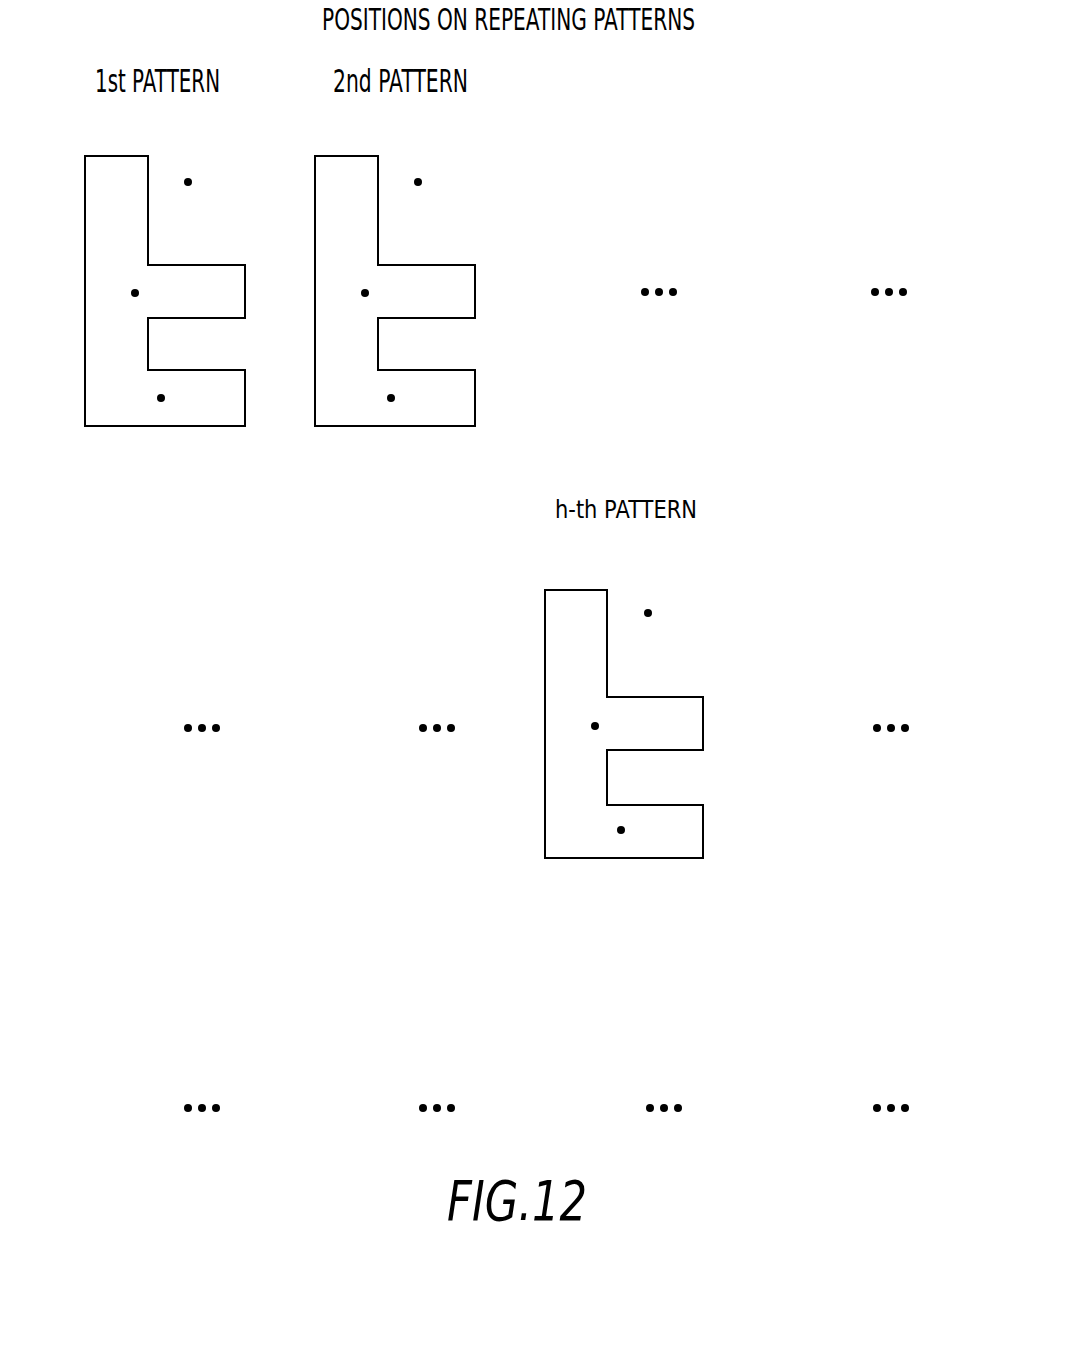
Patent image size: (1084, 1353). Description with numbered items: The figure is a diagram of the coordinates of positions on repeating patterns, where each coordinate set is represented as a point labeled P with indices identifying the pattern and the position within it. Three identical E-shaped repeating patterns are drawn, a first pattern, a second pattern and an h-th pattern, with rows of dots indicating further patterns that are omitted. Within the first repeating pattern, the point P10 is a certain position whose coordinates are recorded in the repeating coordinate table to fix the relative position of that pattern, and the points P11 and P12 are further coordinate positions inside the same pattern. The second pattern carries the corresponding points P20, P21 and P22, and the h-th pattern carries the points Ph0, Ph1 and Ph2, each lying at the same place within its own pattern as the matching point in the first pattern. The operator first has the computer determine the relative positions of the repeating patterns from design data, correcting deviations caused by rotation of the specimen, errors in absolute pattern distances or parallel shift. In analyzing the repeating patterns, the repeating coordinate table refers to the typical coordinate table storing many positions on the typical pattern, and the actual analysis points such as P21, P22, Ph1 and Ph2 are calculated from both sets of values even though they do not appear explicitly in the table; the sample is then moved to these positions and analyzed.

The point P10 in first repeating pattern P10 is at (213, 181).
The point P11 in first repeating pattern P11 is at (160, 291).
The point P12 in first repeating pattern P12 is at (185, 399).
The point P20 in second repeating pattern P20 is at (443, 181).
The point P21 in second repeating pattern P21 is at (390, 291).
The point P22 in second repeating pattern P22 is at (415, 399).
The point Ph0 in h-th repeating pattern Ph0 is at (673, 613).
The point Ph1 in h-th repeating pattern Ph1 is at (619, 722).
The point Ph2 in h-th repeating pattern Ph2 is at (645, 832).